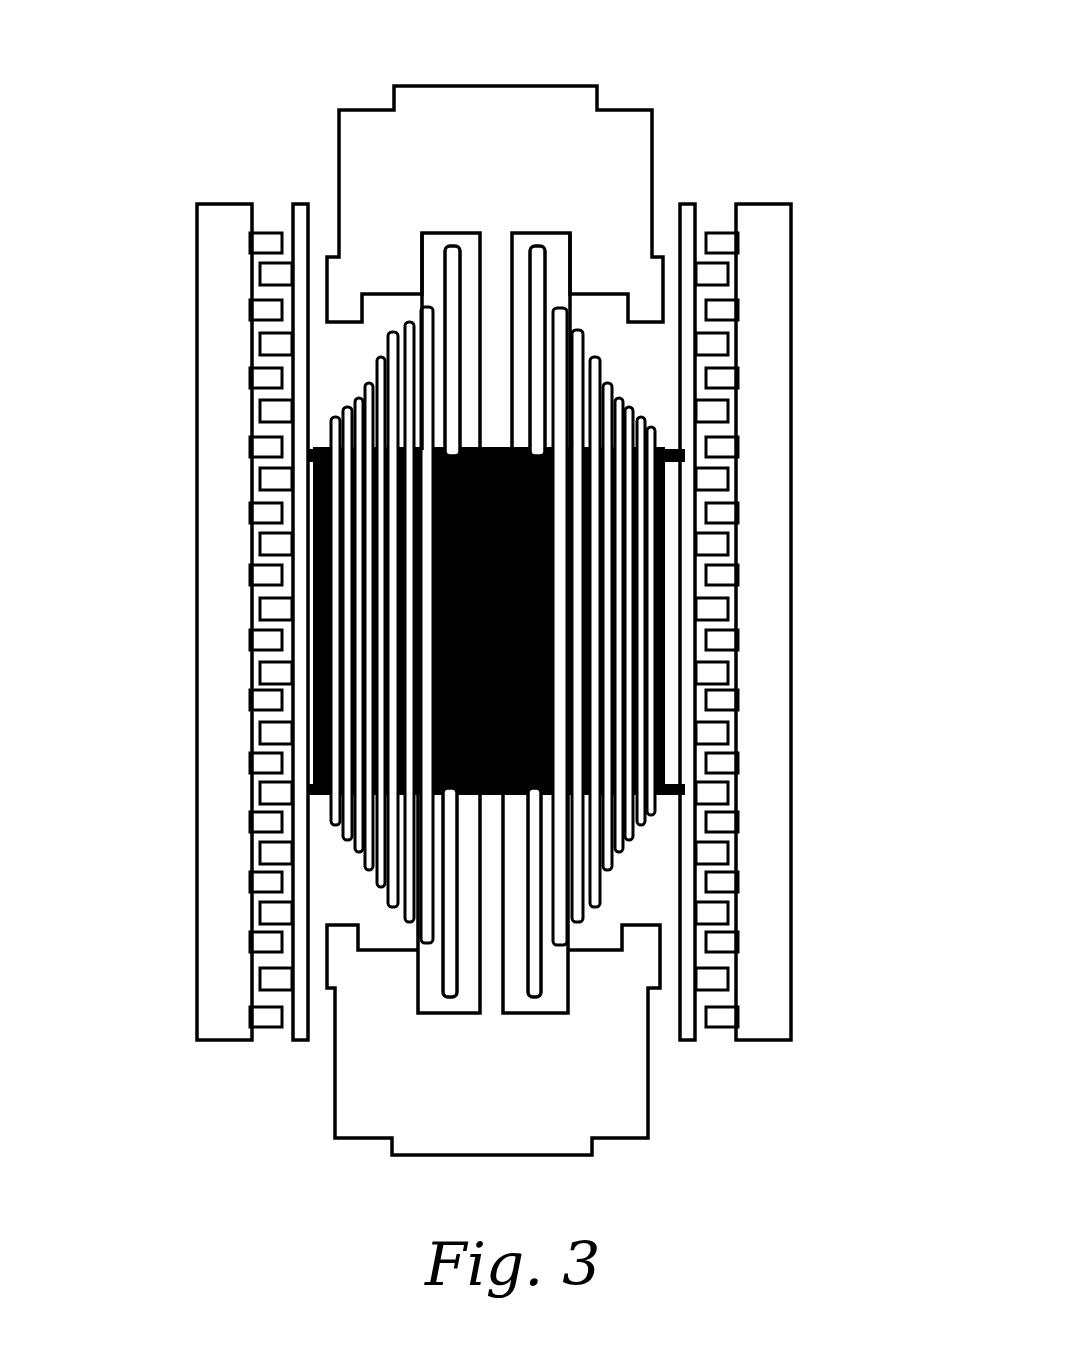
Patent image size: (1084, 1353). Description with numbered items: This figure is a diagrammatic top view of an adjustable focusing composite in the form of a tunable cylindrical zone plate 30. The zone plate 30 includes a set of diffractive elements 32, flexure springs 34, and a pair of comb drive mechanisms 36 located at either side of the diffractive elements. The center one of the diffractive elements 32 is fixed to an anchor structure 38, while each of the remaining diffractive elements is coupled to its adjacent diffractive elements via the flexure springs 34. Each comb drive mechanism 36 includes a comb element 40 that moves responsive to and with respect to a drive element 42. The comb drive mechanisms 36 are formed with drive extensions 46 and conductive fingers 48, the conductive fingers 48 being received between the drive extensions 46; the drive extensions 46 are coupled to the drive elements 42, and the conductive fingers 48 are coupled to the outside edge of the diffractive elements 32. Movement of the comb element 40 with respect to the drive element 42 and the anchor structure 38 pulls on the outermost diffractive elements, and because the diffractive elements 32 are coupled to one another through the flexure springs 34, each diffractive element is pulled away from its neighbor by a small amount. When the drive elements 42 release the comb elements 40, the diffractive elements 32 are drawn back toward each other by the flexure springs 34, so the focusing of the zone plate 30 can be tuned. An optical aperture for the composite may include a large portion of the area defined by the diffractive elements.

The tunable cylindrical zone plate 30 is at (776, 44).
The diffractive elements 32 is at (395, 712).
The flexure springs 34 is at (340, 367).
The comb drive mechanisms 36 is at (253, 126).
The anchor structure 38 is at (487, 100).
The comb element 40 is at (300, 204).
The drive element 42 is at (224, 204).
The drive extensions 46 is at (262, 1015).
The conductive fingers 48 is at (275, 980).